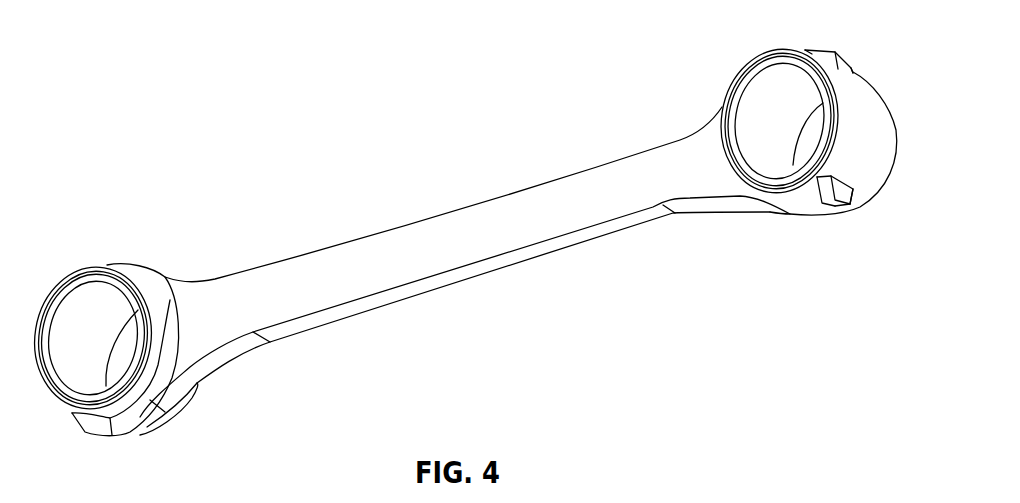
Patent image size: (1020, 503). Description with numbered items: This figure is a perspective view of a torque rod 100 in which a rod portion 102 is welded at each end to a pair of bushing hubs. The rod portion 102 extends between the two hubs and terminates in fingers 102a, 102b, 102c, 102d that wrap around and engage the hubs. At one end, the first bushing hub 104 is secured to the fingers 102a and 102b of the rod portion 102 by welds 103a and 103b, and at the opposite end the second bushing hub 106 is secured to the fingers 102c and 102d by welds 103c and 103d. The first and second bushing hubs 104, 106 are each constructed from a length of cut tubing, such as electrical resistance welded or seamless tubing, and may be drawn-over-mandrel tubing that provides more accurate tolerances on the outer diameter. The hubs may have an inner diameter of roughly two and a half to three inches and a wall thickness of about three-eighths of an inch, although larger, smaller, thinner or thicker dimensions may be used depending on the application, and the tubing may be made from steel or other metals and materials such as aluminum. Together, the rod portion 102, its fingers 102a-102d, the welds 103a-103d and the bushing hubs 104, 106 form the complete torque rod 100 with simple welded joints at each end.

The torque rod 100 is at (123, 127).
The rod portion 102 is at (463, 253).
The finger 102a is at (823, 53).
The finger 102b is at (804, 216).
The finger 102c is at (152, 278).
The finger 102d is at (110, 420).
The weld 103a is at (787, 208).
The weld 103b is at (850, 201).
The weld 103c is at (853, 70).
The weld 103d is at (806, 50).
The first bushing hub 104 is at (878, 172).
The second bushing hub 106 is at (67, 282).